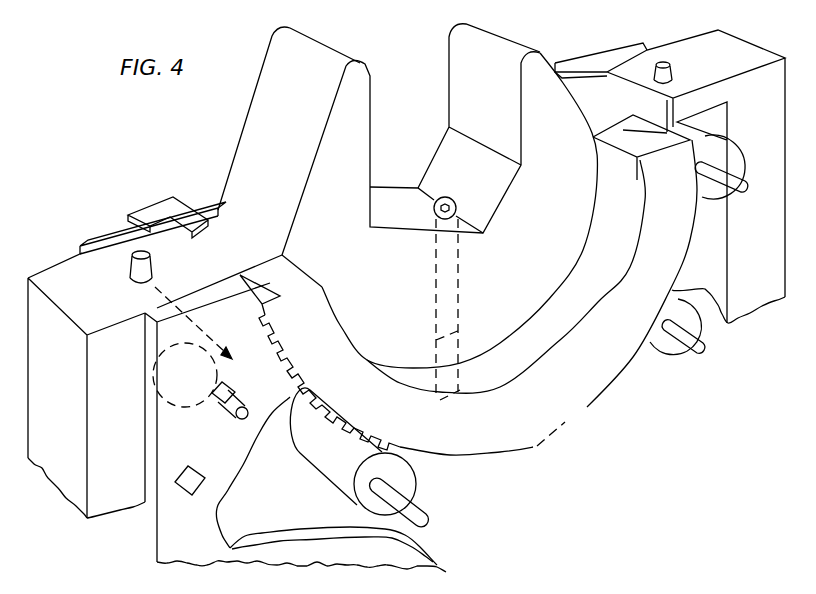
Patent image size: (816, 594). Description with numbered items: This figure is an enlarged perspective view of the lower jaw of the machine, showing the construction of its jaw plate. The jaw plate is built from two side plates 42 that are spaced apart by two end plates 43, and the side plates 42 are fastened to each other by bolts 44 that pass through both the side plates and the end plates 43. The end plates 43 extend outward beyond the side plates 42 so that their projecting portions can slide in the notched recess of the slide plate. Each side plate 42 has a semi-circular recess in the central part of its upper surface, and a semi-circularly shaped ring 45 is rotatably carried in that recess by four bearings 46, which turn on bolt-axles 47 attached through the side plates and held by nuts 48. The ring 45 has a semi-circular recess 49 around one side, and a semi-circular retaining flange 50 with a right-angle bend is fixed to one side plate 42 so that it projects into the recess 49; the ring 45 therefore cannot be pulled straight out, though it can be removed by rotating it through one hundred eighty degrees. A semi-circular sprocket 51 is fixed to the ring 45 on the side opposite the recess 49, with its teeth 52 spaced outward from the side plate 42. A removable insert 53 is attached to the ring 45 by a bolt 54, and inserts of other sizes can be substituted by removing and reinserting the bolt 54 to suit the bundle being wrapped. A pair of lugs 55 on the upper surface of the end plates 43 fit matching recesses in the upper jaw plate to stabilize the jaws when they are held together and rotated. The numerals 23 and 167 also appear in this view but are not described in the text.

The sewing machine 23 is at (507, 593).
The side plates 42 is at (80, 250).
The end plates 43 is at (45, 277).
The bolts 44 is at (184, 472).
The semi-circularly shaped ring 45 is at (218, 212).
The bearings 46 is at (146, 363).
The bolt-axles 47 is at (247, 417).
The nuts 48 is at (230, 380).
The semi-circularly shaped recess 49 is at (204, 227).
The retaining flange 50 is at (165, 208).
The semi-circularly shaped sprocket 51 is at (587, 405).
The teeth 52 is at (317, 454).
The removable insert 53 is at (368, 92).
The bolt 54 is at (437, 200).
The lugs 55 is at (132, 262).
The base plate 167 is at (356, 593).